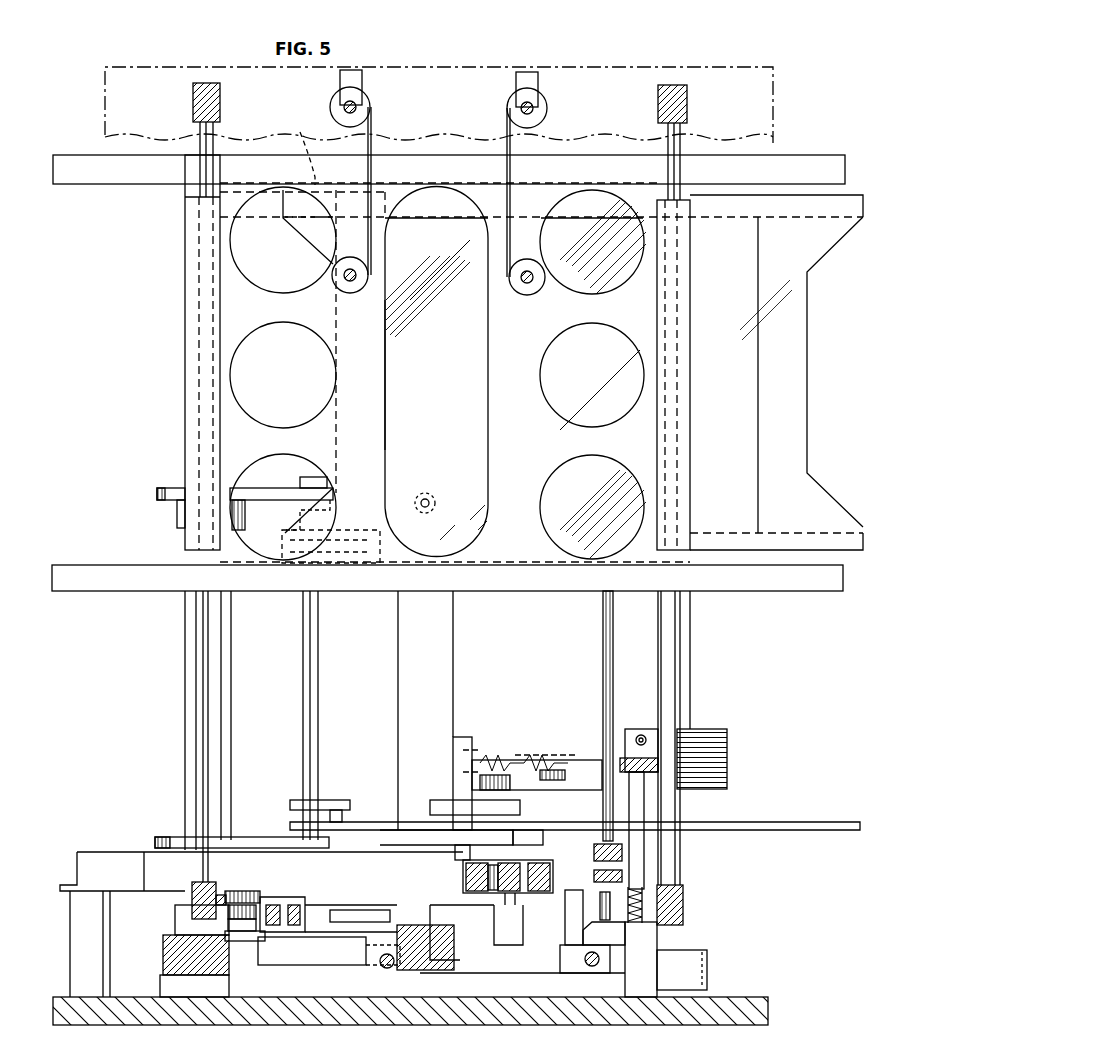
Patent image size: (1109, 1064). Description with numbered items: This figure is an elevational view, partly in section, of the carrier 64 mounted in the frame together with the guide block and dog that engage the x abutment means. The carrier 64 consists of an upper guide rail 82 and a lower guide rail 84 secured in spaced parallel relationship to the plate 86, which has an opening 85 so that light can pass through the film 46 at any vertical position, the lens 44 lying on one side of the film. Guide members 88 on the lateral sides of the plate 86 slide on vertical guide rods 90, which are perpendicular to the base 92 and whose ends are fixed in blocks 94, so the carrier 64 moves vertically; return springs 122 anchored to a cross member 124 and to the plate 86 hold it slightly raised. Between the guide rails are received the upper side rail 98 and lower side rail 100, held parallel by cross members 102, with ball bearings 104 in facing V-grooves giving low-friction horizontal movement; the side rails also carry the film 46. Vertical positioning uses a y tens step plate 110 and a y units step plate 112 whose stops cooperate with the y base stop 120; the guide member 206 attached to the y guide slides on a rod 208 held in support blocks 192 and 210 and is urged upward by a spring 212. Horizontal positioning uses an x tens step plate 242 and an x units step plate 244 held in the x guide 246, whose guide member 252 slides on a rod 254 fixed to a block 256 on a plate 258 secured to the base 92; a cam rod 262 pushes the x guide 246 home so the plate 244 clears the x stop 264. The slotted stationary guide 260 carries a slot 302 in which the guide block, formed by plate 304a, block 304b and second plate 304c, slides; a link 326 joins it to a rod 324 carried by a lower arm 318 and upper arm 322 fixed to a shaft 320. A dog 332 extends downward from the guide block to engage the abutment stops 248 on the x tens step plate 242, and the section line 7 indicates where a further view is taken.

The section line 7- 7 is at (545, 1063).
The lens 44 is at (425, 494).
The film 46 is at (471, 332).
The carrier 64 is at (177, 349).
The upper guide rail 82 is at (803, 165).
The lower guide rail 84 is at (802, 584).
The opening 85 is at (388, 434).
The plate 86 is at (230, 300).
The guide members 88 is at (190, 403).
The vertical guide rods 90 is at (195, 666).
The base 92 is at (114, 1025).
The blocks 94 is at (193, 100).
The upper side rail 98 is at (720, 218).
The lower side rail 100 is at (721, 531).
The cross members 102 is at (794, 330).
The ball bearings 104 is at (708, 172).
The y tens step plate 110 is at (612, 702).
The y units step plate 112 is at (621, 860).
The y base stop 120 is at (625, 923).
The return springs 122 is at (359, 136).
The cross member 124 is at (597, 82).
The support block 192 is at (663, 945).
The guide member 206 is at (638, 808).
The rod 208 is at (625, 876).
The support block 210 is at (652, 756).
The spring 212 is at (643, 906).
The x tens step plate 242 is at (352, 904).
The x units step plate 244 is at (239, 896).
The x guide 246 is at (291, 896).
The abutment stops 248 is at (444, 920).
The guide member 252 is at (320, 951).
The rod 254 is at (236, 942).
The block 256 is at (160, 960).
The plate 258 is at (169, 975).
The slotted stationary guide 260 is at (265, 859).
The cam rod 262 is at (246, 945).
The x stop 264 is at (207, 940).
The slot 302 is at (520, 860).
The plate 304a is at (546, 940).
The block 304b is at (463, 878).
The second plate 304c is at (472, 860).
The lower arm 318 is at (266, 842).
The shaft 320 is at (189, 630).
The upper arm 322 is at (168, 492).
The rod 324 is at (304, 672).
The link 326 is at (327, 827).
The dog 332 is at (558, 885).